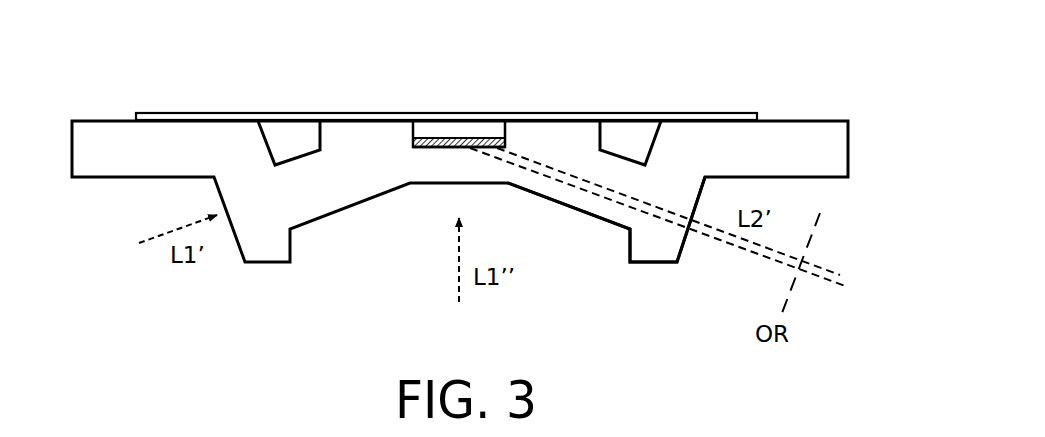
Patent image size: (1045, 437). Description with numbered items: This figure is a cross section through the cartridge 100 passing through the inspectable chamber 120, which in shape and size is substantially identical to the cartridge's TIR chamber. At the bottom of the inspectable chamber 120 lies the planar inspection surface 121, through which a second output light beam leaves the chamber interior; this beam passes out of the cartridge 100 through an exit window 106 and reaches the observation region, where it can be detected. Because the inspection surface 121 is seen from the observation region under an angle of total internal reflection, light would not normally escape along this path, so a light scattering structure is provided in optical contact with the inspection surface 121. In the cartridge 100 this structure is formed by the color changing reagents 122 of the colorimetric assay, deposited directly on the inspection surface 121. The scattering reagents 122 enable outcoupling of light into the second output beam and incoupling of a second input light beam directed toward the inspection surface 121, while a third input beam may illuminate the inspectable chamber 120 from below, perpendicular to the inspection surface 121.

The cartridge 100 is at (758, 82).
The exit window 106 is at (688, 237).
The inspectable chamber 120 is at (443, 128).
The inspection surface 121 is at (432, 148).
The color changing reagents 122 is at (477, 138).